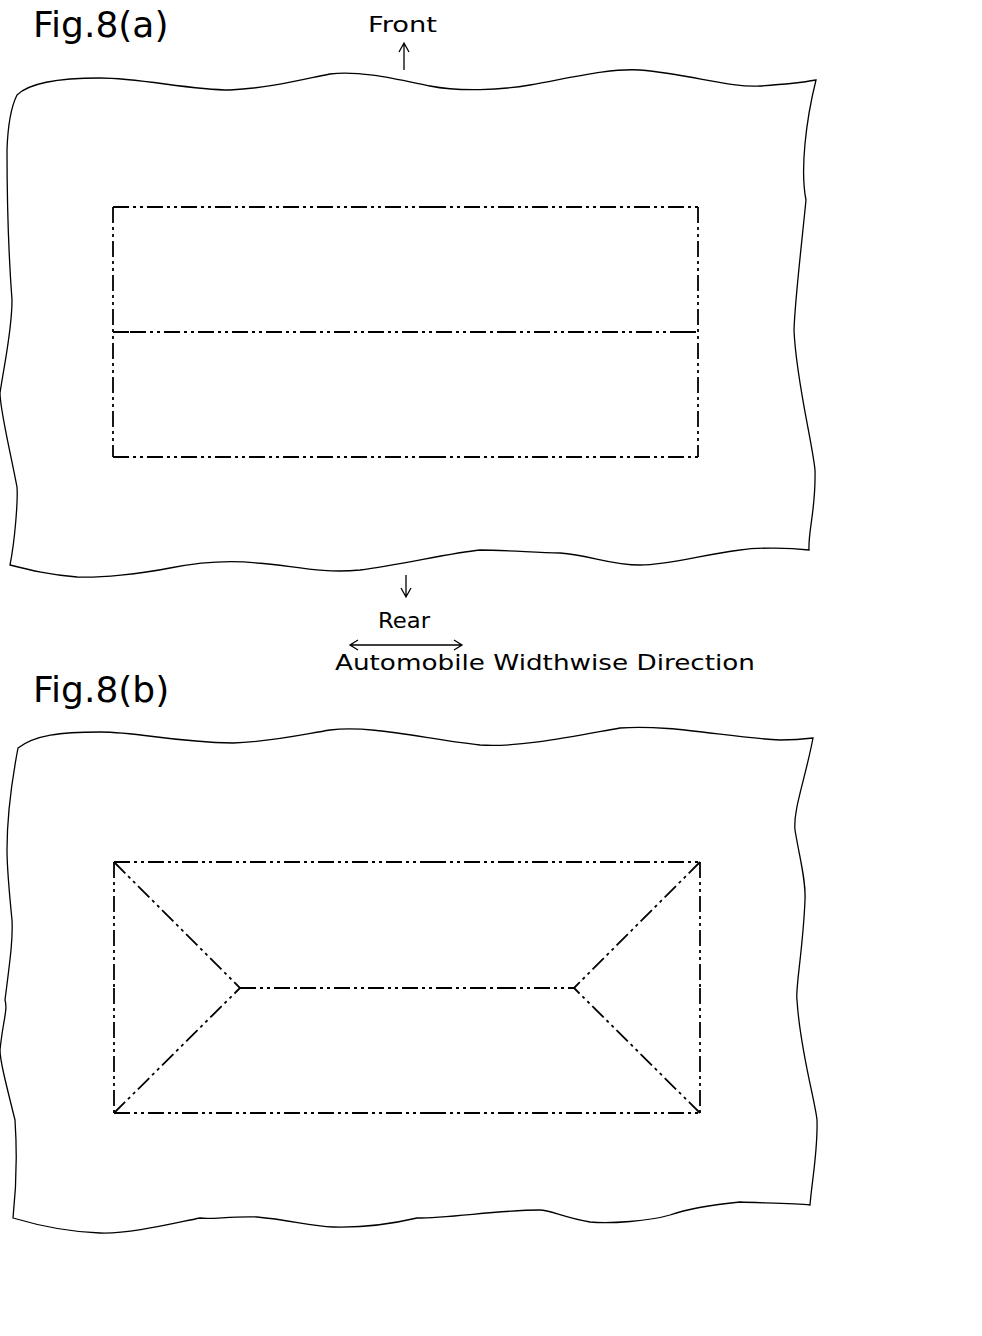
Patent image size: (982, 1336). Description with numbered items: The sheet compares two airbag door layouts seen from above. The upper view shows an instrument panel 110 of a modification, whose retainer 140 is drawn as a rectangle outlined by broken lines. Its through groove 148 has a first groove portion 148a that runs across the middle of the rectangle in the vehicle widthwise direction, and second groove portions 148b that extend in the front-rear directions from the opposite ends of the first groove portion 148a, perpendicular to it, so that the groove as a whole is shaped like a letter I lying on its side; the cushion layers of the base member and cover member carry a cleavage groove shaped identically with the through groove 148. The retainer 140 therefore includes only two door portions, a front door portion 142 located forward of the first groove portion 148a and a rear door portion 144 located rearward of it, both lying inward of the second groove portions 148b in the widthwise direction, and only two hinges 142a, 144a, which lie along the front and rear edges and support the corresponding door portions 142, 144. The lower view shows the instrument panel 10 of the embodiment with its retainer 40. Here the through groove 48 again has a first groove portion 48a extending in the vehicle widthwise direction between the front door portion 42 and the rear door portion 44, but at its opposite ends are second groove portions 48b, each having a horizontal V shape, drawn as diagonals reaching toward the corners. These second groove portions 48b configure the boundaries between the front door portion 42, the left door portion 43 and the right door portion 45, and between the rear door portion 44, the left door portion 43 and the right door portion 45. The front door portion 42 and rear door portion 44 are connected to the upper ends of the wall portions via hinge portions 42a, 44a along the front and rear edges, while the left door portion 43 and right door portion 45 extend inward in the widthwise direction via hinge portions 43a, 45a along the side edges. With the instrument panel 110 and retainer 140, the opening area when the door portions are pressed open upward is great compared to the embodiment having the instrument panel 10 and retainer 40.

In FIG. 8A, the instrument panel 110 is at (256, 552).
In FIG. 8A, the retainer 140 is at (638, 185).
In FIG. 8A, the front door portion 142 is at (333, 207).
In FIG. 8A, the hinge 142a is at (567, 207).
In FIG. 8A, the rear door portion 144 is at (333, 457).
In FIG. 8A, the hinge 144a is at (567, 457).
In FIG. 8A, the through groove 148 is at (452, 305).
In FIG. 8A, the first groove portion 148a is at (400, 331).
In FIG. 8A, the second groove portions 148b is at (113, 293).
In FIG. 8B, the instrument panel 10 is at (257, 1207).
In FIG. 8B, the retainer 40 is at (640, 840).
In FIG. 8B, the front door portion 42 is at (333, 862).
In FIG. 8B, the hinge portion 42a is at (570, 862).
In FIG. 8B, the left door portion 43 is at (114, 1022).
In FIG. 8B, the hinge portion 43a is at (114, 925).
In FIG. 8B, the rear door portion 44 is at (335, 1113).
In FIG. 8B, the hinge portion 44a is at (572, 1113).
In FIG. 8B, the right door portion 45 is at (700, 1025).
In FIG. 8B, the hinge portion 45a is at (700, 928).
In FIG. 8B, the through groove 48 is at (455, 958).
In FIG. 8B, the first groove portion 48a is at (400, 988).
In FIG. 8B, the second groove portions 48b is at (197, 946).